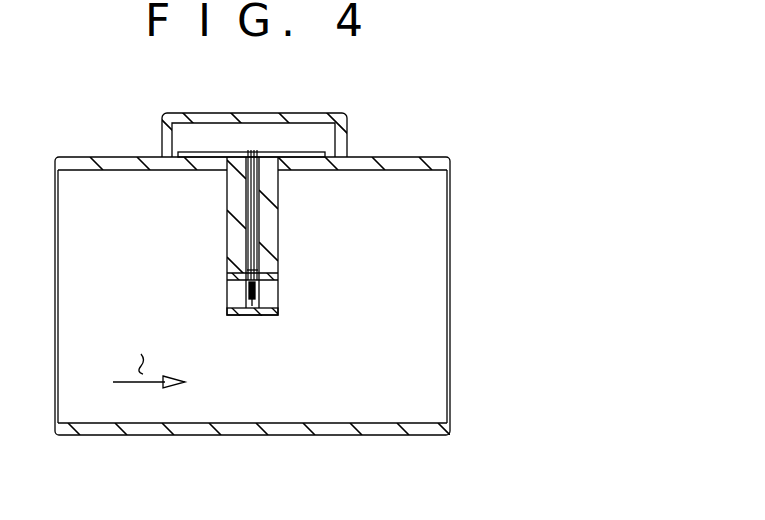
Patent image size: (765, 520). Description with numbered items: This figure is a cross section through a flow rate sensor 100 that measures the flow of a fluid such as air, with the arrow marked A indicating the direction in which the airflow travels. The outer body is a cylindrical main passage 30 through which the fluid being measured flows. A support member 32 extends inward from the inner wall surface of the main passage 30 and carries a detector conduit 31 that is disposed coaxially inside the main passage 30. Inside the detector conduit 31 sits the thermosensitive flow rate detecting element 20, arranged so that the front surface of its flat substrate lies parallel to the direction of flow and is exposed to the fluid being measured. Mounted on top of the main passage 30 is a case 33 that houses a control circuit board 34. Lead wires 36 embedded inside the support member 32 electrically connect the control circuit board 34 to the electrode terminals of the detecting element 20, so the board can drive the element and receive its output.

The flow rate sensor 100 is at (86, 81).
The main passage 30 is at (437, 153).
The case 33 is at (350, 132).
The control circuit board 34 is at (192, 151).
The support member 32 is at (280, 229).
The lead wires 36 is at (246, 236).
The thermosensitive flow rate detecting element 20 is at (253, 293).
The detector conduit 31 is at (281, 320).